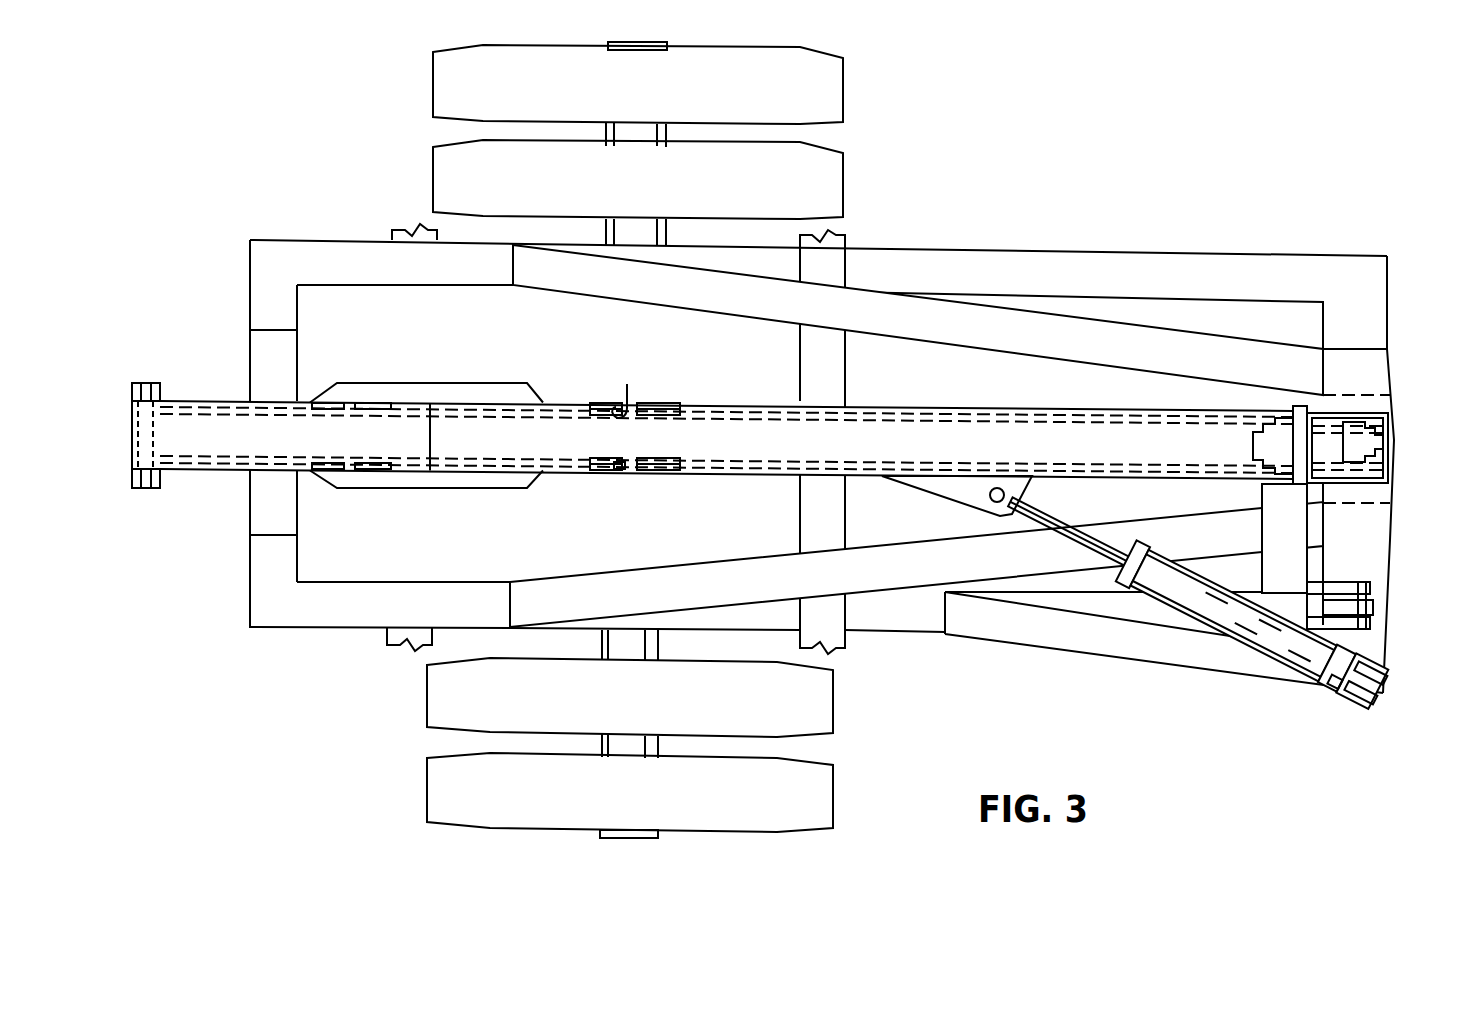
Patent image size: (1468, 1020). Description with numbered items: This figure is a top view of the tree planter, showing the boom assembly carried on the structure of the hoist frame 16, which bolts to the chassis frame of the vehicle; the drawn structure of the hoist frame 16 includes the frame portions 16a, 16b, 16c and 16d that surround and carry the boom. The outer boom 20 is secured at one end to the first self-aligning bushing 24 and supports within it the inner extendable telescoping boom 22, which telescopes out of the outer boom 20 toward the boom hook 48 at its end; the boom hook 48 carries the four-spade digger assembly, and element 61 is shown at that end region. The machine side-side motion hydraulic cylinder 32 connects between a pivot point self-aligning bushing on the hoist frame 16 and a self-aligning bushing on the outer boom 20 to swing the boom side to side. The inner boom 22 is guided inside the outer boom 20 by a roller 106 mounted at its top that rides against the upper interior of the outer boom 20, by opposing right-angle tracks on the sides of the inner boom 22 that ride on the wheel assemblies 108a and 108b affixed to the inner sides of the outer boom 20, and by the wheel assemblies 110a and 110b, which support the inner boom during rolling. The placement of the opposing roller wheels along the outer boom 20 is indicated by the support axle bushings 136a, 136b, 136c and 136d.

The hoist frame 16 is at (1388, 582).
The top frame member 16a is at (1388, 334).
The lower brace member 16b is at (1110, 660).
The lower diagonal frame member 16c is at (618, 572).
The upper diagonal frame member 16d is at (1233, 342).
The outer boom 20 is at (890, 403).
The inner extendable telescoping boom 22 is at (930, 421).
The first self-aligning bushing 24 is at (1382, 450).
The machine side-side motion hydraulic cylinder 32 is at (1178, 612).
The boom hook 48 is at (207, 470).
The end flange 61 is at (148, 383).
The roller 106 is at (1255, 447).
The wheel assembly 108a is at (631, 390).
The wheel assembly 108b is at (620, 469).
The wheel assembly 110a is at (330, 469).
The wheel assembly 110b is at (381, 469).
The support axle bushing 136a is at (604, 402).
The support axle bushing 136b is at (659, 402).
The support axle bushing 136c is at (600, 470).
The support axle bushing 136d is at (661, 470).